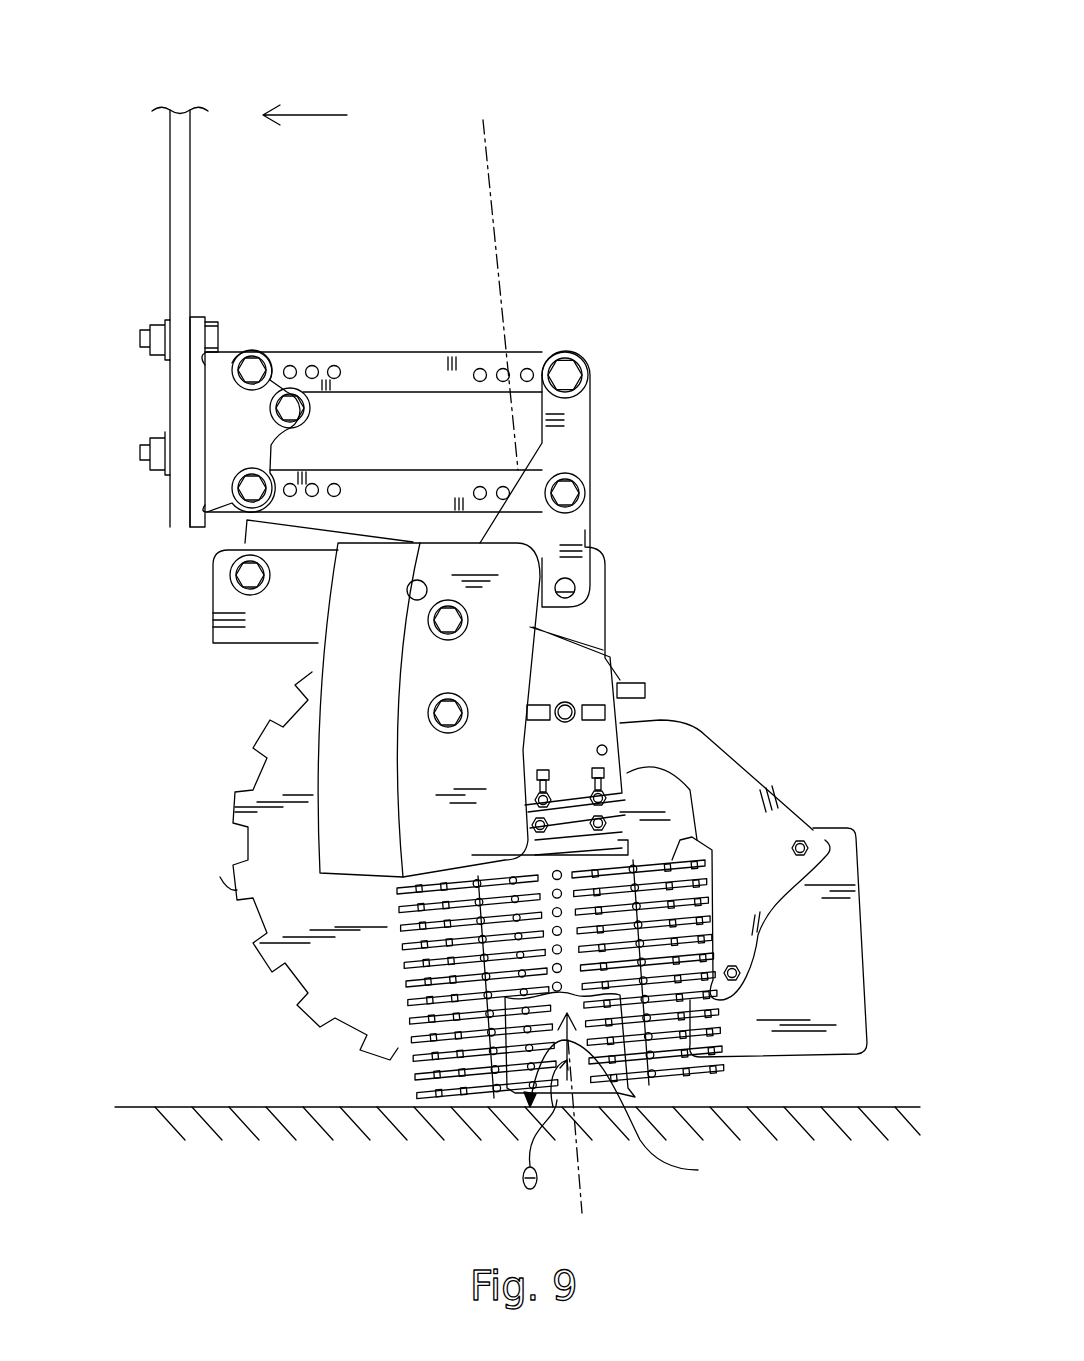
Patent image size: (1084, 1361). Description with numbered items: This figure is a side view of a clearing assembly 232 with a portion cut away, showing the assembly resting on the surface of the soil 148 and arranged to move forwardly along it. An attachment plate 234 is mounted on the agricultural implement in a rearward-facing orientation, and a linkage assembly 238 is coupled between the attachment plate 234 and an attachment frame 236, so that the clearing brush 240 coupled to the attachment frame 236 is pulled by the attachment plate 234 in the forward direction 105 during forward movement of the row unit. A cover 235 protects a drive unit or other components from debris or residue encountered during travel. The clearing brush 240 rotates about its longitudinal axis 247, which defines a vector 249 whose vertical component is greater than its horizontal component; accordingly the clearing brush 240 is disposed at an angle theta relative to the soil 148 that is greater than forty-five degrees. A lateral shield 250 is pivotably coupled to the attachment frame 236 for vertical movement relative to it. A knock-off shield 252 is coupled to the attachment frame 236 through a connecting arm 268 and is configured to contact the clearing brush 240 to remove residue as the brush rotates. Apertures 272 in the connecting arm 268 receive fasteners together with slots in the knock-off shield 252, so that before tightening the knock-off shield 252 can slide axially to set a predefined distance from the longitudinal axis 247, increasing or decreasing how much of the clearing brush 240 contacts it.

The forward direction 105 is at (310, 114).
The clearing assembly 232 is at (830, 118).
The attachment plate 234 is at (178, 190).
The cover 235 is at (330, 658).
The attachment frame 236 is at (580, 432).
The linkage assembly 238 is at (395, 365).
The clearing brush 240 is at (393, 967).
The longitudinal axis 247 is at (580, 1190).
The vector 249 is at (638, 1115).
The lateral shield 250 is at (235, 885).
The knock-off shield 252 is at (835, 978).
The connecting arm 268 is at (740, 790).
The apertures 272 is at (808, 840).
The soil 148 is at (177, 1107).